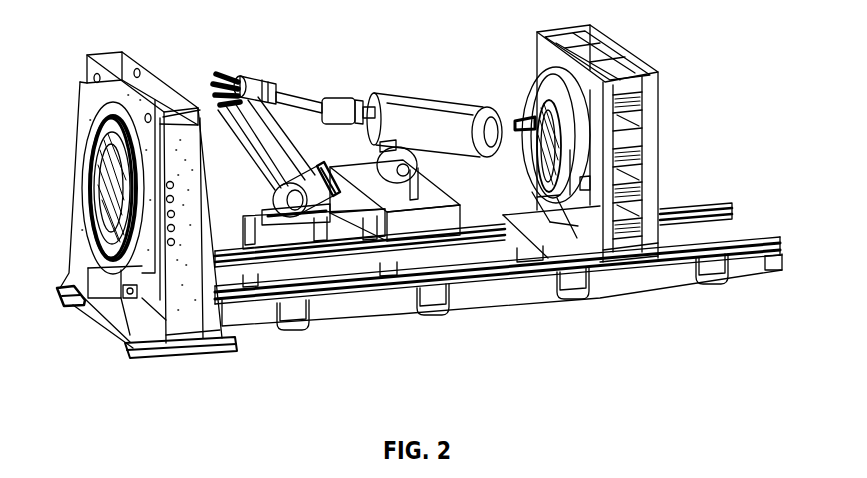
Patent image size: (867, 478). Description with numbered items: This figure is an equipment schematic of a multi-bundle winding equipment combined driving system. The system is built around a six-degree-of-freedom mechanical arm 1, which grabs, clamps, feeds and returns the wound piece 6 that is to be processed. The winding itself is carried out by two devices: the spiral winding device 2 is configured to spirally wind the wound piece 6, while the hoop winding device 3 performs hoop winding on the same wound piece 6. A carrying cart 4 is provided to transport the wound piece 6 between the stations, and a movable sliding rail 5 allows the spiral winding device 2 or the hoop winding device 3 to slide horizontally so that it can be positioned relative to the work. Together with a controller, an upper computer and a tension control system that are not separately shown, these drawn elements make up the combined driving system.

The six-degree-of-freedom mechanical arm 1 is at (212, 82).
The spiral winding device 2 is at (225, 312).
The hoop winding device 3 is at (533, 74).
The carrying cart 4 is at (410, 222).
The movable sliding rail 5 is at (600, 280).
The wound piece 6 is at (413, 123).